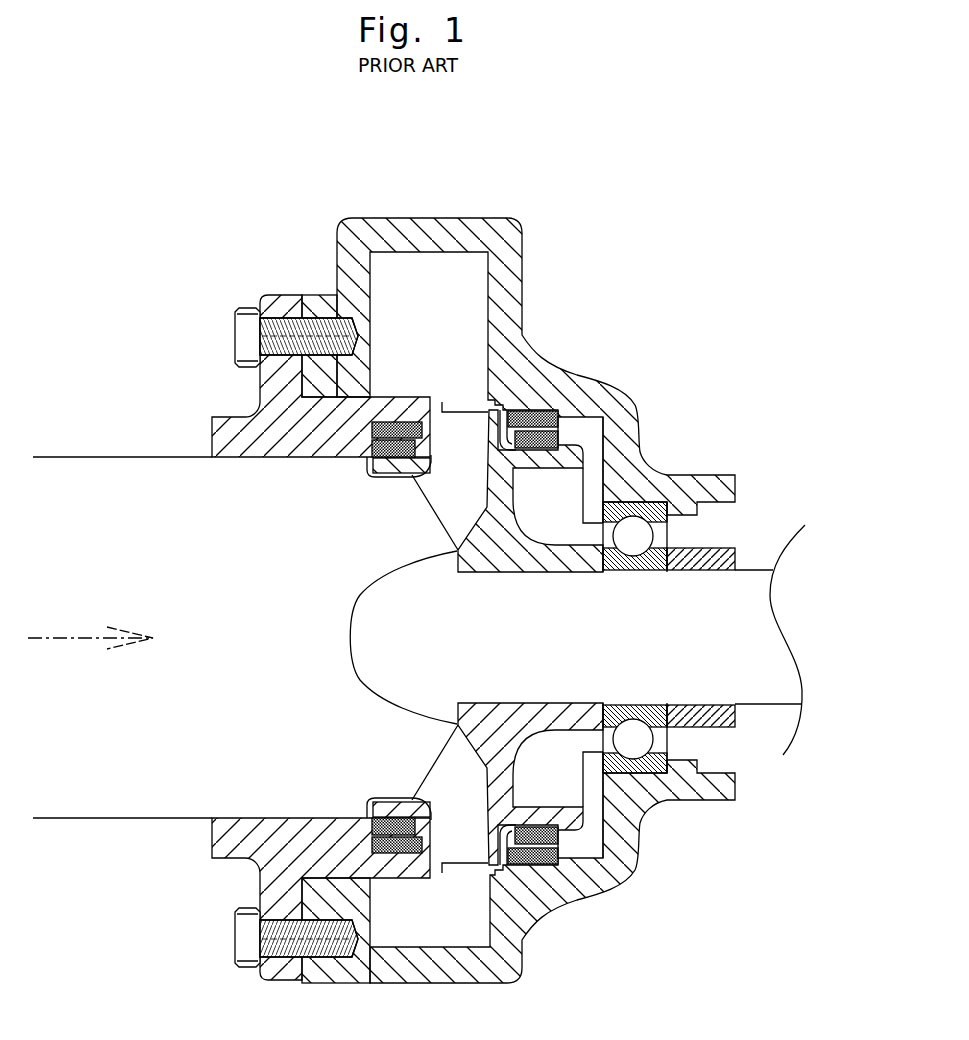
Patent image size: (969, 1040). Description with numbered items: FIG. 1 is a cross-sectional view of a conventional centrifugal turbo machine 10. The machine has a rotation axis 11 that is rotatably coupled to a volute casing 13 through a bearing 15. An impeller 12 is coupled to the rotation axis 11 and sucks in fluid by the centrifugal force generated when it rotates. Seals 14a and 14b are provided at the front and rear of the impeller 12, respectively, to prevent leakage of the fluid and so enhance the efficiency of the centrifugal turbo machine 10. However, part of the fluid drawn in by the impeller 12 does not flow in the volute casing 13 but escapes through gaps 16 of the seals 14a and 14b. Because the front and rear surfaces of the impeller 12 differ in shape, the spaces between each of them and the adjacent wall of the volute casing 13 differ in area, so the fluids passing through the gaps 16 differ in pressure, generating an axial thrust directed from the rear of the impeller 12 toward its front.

The centrifugal turbo machine 10 is at (624, 302).
The rotation axis 11 is at (748, 632).
The impeller 12 is at (410, 476).
The volute casing 13 is at (440, 228).
The seal 14a is at (367, 460).
The seal 14b is at (560, 430).
The bearing 15 is at (637, 537).
The gaps 16 is at (560, 452).